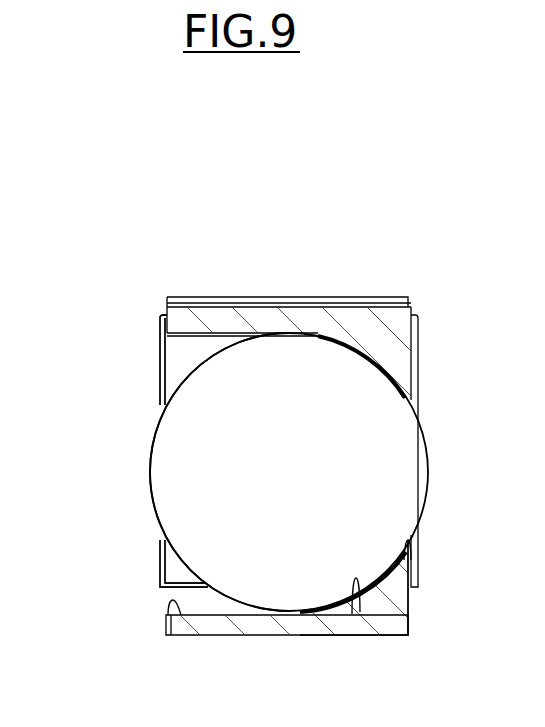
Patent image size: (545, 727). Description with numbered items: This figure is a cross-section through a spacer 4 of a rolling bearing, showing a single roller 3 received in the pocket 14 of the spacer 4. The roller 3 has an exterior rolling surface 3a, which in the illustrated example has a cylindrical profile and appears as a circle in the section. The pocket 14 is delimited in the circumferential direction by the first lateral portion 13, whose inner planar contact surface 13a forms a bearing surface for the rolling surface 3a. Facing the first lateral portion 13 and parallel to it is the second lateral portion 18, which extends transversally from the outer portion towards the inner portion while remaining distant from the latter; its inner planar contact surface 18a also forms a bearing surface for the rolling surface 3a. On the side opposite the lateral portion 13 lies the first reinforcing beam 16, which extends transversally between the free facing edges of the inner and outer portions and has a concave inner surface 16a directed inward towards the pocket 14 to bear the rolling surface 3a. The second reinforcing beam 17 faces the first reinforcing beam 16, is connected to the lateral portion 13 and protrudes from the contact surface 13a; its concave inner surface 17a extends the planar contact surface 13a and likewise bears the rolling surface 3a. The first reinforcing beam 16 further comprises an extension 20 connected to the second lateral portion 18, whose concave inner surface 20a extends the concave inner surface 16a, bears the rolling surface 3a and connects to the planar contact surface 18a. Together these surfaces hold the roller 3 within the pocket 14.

The roller 3 is at (296, 474).
The rolling surface 3a is at (150, 472).
The spacer 4 is at (168, 275).
The lateral portion 13 is at (268, 324).
The inner planar contact surface 13a is at (223, 337).
The pocket 14 is at (171, 358).
The first reinforcing beam 16 is at (407, 610).
The concave inner surface 16a is at (405, 549).
The second reinforcing beam 17 is at (403, 338).
The concave inner surface 17a is at (352, 347).
The second lateral portion 18 is at (205, 618).
The inner planar contact surface 18a is at (170, 617).
The extension 20 is at (324, 618).
The concave inner surface 20a is at (358, 612).